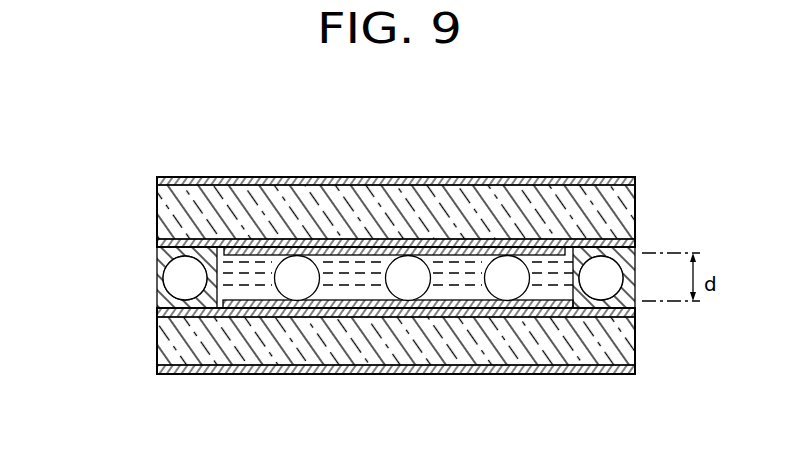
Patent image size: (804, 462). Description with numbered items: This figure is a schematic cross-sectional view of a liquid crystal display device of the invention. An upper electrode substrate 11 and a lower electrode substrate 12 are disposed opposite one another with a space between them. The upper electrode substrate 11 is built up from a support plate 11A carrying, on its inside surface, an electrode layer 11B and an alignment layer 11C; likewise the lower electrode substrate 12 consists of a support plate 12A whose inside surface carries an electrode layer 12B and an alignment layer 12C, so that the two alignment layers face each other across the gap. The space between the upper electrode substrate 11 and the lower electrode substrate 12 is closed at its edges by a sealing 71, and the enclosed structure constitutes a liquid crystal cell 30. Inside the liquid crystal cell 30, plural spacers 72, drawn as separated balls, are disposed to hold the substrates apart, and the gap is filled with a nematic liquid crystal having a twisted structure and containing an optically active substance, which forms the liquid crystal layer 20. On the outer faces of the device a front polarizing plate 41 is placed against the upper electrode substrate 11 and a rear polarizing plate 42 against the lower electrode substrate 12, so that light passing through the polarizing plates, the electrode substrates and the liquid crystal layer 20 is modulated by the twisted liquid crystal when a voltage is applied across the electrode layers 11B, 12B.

The upper electrode substrate 11 is at (152, 187).
The support plate 11A is at (618, 215).
The electrode layer 11B is at (239, 240).
The alignment layer 11C is at (279, 251).
The lower electrode substrate 12 is at (150, 313).
The support plate 12A is at (614, 338).
The electrode layer 12B is at (229, 314).
The alignment layer 12C is at (256, 309).
The liquid crystal layer 20 is at (590, 247).
The liquid crystal cell 30 is at (391, 276).
The front polarizing plate 41 is at (412, 184).
The rear polarizing plate 42 is at (409, 367).
The sealing 71 is at (158, 268).
The spacers 72 is at (513, 257).